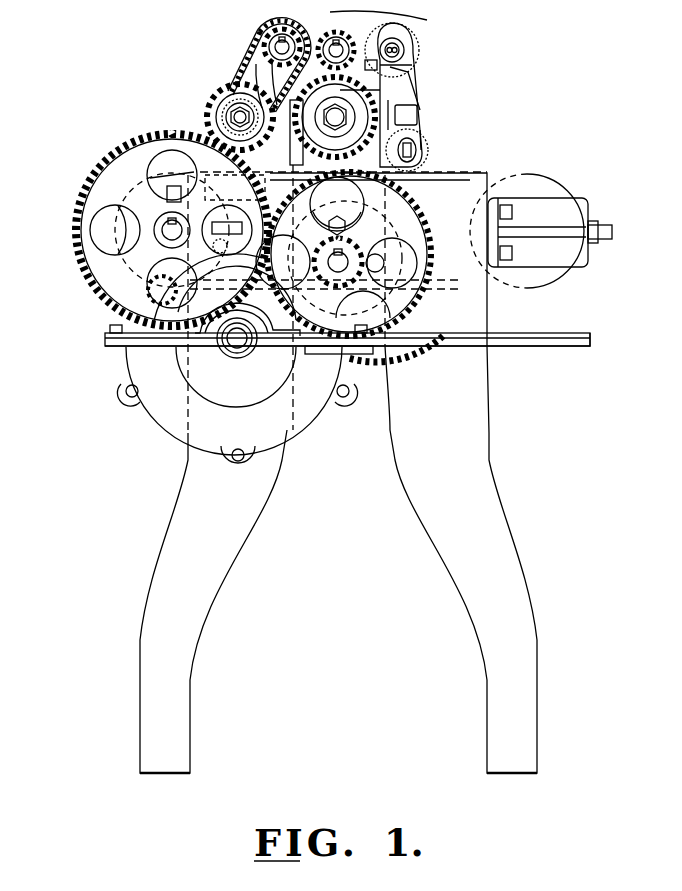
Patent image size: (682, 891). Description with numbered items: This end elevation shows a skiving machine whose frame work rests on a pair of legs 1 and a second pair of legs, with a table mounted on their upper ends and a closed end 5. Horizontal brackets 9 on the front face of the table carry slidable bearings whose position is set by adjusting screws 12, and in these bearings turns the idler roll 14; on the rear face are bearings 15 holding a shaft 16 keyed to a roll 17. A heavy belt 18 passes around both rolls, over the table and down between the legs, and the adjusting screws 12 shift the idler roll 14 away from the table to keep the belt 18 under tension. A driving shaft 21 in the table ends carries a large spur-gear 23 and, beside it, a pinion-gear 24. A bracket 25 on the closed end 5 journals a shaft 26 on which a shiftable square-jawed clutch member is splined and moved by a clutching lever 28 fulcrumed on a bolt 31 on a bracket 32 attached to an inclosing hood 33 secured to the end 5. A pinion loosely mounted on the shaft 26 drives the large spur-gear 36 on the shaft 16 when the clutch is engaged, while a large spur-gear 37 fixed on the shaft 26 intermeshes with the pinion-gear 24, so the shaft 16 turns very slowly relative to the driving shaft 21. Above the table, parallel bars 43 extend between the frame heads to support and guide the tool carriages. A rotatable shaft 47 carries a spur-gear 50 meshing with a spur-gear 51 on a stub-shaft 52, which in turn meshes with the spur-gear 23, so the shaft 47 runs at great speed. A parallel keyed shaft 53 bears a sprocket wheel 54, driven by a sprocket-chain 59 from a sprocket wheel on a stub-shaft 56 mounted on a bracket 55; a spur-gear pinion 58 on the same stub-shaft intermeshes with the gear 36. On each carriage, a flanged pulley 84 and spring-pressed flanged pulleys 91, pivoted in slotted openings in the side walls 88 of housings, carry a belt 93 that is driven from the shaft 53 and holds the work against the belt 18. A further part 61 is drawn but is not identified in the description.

The pair of legs 1 is at (338, 469).
The closed end 5 is at (338, 254).
The horizontal brackets 9 is at (538, 232).
The adjusting screws 12 is at (614, 232).
The idler roll 14 is at (527, 231).
The bearings 15 is at (182, 190).
The shaft 16 is at (162, 231).
The roll 17 is at (115, 222).
The heavy belt 18 is at (488, 176).
The driving shaft 21 is at (348, 263).
The large spur-gear 23 is at (420, 312).
The pinion-gear 24 is at (362, 217).
The bracket 25 is at (192, 260).
The shaft 26 is at (234, 340).
The clutching lever 28 is at (347, 327).
The bolt 31 is at (110, 328).
The bracket 32 is at (105, 341).
The inclosing hood 33 is at (237, 405).
The large spur-gear 36 is at (108, 153).
The large spur-gear 37 is at (340, 308).
The bars 43 is at (405, 98).
The rotatable shaft 47 is at (405, 35).
The spur-gear 50 is at (389, 21).
The spur-gear 51 is at (380, 90).
The stub-shaft 52 is at (417, 128).
The shaft 53 is at (336, 48).
The sprocket wheel 54 is at (252, 50).
The bracket 55 is at (234, 118).
The stub-shaft 56 is at (224, 108).
The spur-gear pinion 58 is at (233, 97).
The sprocket-chain 59 is at (278, 43).
The gear wheel 61 is at (365, 80).
The flanged-pulley 84 is at (399, 52).
The side walls 88 is at (422, 140).
The flanged pulleys 91 is at (417, 150).
The belt 93 is at (378, 68).